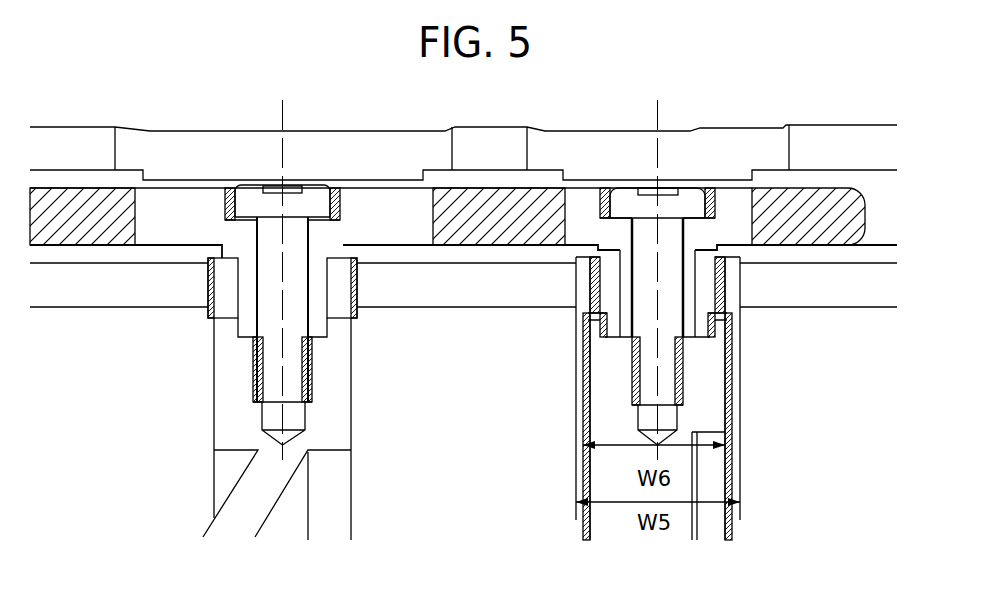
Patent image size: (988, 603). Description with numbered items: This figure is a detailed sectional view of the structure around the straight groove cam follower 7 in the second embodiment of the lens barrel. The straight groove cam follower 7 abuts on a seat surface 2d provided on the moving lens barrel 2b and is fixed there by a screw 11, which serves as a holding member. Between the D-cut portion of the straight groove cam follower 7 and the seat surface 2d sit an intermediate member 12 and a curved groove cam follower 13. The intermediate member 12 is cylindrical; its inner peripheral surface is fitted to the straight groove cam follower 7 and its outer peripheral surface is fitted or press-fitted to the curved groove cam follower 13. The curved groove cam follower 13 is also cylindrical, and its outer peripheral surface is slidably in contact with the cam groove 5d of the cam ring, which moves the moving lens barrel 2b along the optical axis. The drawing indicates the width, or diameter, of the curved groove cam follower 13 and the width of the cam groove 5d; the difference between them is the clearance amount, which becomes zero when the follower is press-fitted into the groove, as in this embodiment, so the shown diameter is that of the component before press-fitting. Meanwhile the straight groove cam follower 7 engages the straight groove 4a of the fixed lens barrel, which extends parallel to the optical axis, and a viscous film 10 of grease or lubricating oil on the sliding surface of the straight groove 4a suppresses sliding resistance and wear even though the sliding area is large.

The moving lens barrel 2b is at (710, 407).
The seat surface 2d is at (617, 338).
The straight groove 4a is at (876, 200).
The cam groove 5d is at (735, 284).
The straight groove cam follower 7 is at (725, 202).
The viscous film 10 is at (820, 200).
The screw 11 is at (688, 202).
The intermediate member 12 is at (707, 311).
The curved groove cam follower 13 is at (593, 290).